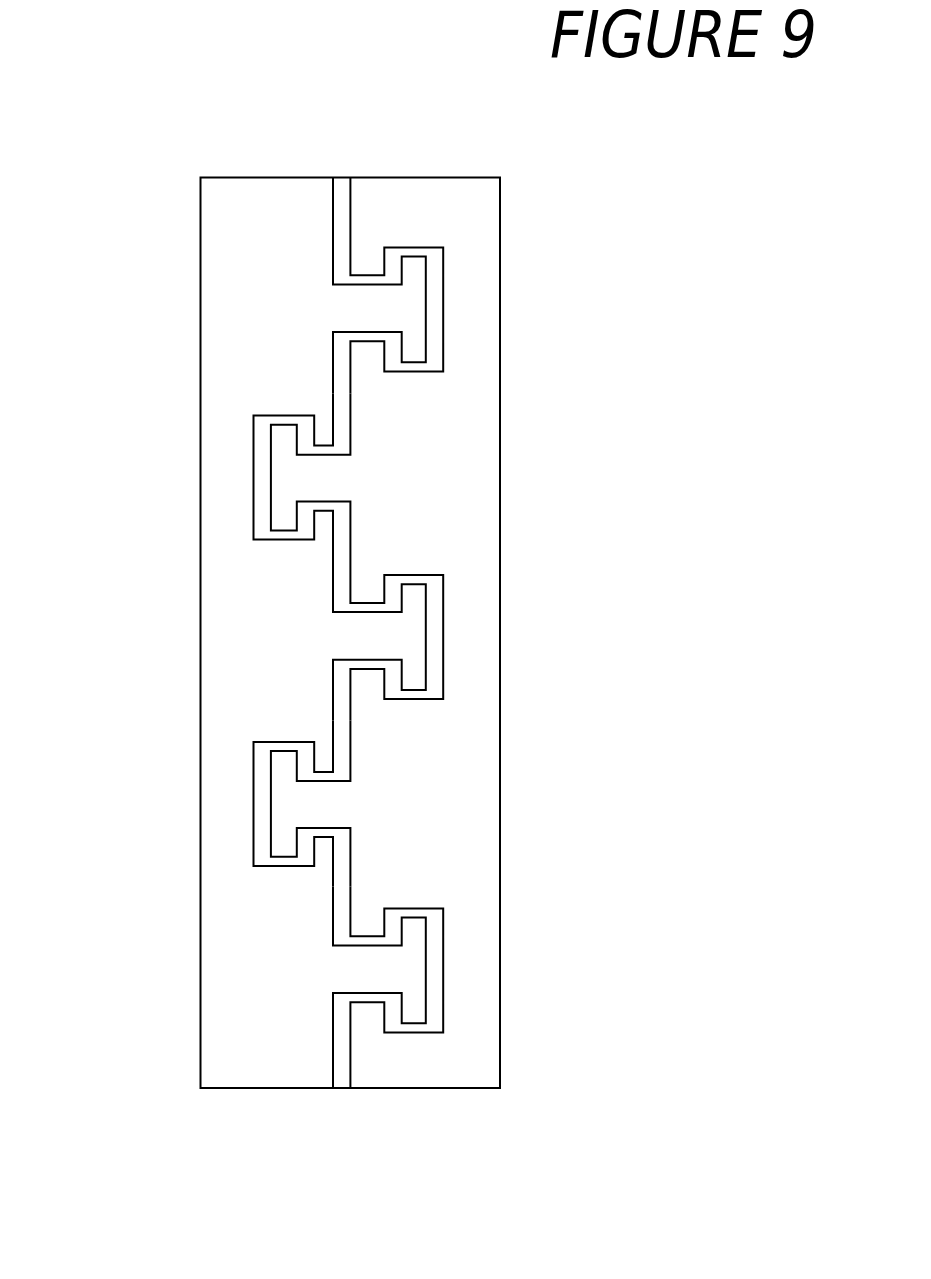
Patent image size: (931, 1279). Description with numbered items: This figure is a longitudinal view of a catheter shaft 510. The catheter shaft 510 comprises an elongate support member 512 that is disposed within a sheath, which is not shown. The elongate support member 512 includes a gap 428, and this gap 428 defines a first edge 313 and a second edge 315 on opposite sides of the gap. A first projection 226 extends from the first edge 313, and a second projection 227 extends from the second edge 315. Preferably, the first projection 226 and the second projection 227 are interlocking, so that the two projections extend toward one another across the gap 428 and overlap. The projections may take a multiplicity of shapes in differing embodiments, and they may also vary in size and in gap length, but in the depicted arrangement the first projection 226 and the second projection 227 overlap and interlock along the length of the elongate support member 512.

The first edge 313 is at (333, 198).
The second edge 315 is at (350, 199).
The elongate support member 512 is at (252, 319).
The second projection 227 is at (272, 477).
The first projection 226 is at (425, 638).
The gap 428 is at (263, 822).
The catheter shaft 510 is at (392, 632).